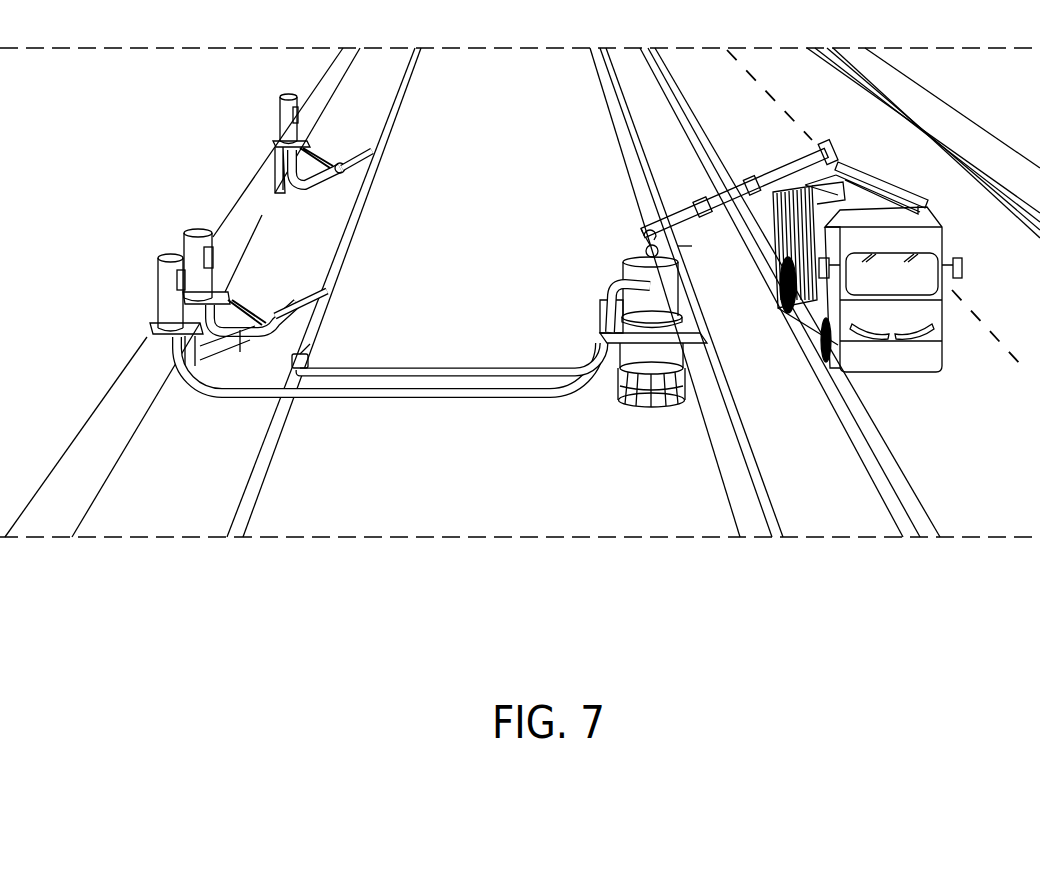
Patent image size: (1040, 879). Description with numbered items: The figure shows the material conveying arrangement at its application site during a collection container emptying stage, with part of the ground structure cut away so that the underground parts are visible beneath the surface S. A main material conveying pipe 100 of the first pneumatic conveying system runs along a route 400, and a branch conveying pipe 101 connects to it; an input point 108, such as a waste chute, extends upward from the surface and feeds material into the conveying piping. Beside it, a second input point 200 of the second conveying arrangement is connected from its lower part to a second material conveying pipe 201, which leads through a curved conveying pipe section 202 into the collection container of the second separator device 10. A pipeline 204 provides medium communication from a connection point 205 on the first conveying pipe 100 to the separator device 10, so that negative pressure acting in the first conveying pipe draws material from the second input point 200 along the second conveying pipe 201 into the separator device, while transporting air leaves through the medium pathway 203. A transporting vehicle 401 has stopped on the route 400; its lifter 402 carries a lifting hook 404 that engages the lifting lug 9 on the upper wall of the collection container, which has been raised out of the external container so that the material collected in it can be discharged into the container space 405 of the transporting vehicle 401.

The material conveying pipe 100 is at (250, 497).
The branch conveying pipe 101 is at (297, 293).
The input point 108 is at (182, 222).
The second input point 200 is at (165, 270).
The second material conveying pipe 201 is at (437, 396).
The conveying pipe section 202 is at (680, 322).
The medium pathway 203 is at (608, 290).
The pipeline 204 is at (450, 368).
The connection point 205 is at (310, 366).
The route 400 is at (707, 58).
The transporting vehicle 401 is at (913, 208).
The lifter 402 is at (742, 188).
The lifting hook 404 is at (636, 226).
The container space 405 is at (803, 193).
The lifting lug 9 is at (644, 247).
The second separator device 10 is at (685, 240).
The surface S is at (146, 327).